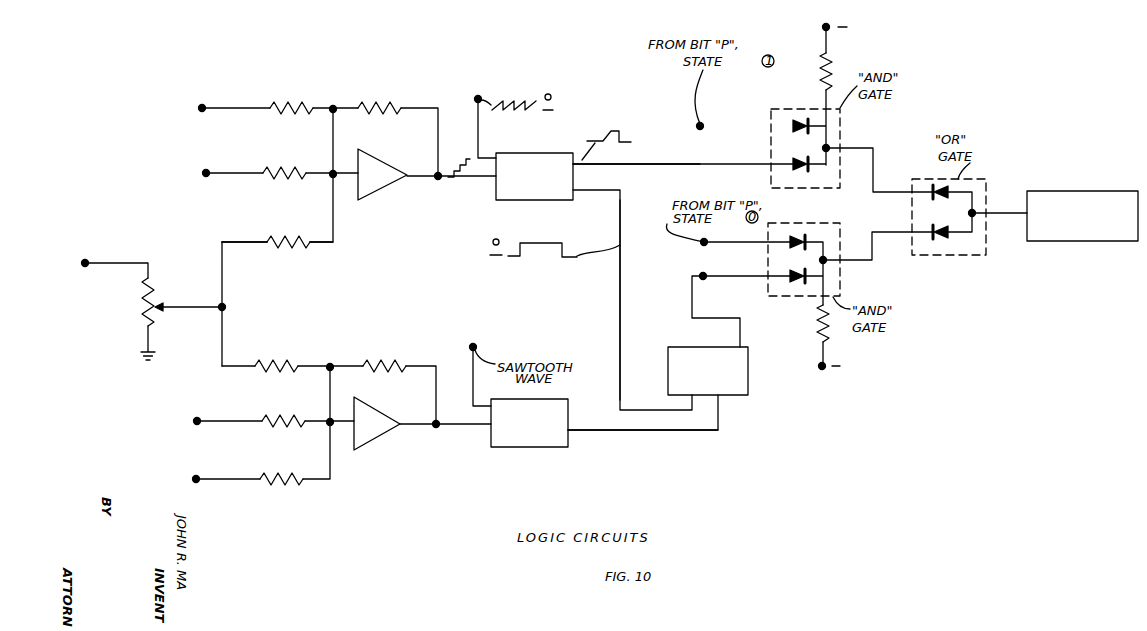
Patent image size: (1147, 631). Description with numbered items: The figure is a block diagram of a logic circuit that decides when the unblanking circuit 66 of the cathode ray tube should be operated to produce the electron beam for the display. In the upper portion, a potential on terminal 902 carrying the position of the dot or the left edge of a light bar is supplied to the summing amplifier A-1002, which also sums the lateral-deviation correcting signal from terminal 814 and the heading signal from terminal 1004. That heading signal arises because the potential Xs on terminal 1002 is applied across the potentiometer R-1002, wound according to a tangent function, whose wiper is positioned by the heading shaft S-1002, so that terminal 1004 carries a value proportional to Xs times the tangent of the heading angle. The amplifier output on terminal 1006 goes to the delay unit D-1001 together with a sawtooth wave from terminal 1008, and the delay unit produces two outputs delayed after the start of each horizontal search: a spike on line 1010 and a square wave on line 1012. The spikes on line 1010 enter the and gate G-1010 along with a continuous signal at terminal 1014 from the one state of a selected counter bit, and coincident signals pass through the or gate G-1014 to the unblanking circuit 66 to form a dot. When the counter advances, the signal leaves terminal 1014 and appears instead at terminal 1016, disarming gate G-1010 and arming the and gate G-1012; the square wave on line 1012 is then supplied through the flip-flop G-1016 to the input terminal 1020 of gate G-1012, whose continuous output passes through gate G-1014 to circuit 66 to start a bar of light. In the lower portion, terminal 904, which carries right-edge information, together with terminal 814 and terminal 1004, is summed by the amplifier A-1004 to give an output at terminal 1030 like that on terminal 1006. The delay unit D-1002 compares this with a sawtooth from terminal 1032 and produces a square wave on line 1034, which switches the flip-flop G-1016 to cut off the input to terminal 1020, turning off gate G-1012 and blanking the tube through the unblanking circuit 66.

The terminal 902 is at (200, 108).
The terminal 814 is at (204, 173).
The terminal 904 is at (194, 421).
The terminal 1002 is at (88, 277).
The potentiometer R-1002 is at (143, 312).
The shaft S-1002 is at (179, 300).
The terminal 1004 is at (224, 306).
The summing amplifier A-1002 is at (363, 198).
The amplifier A-1004 is at (373, 437).
The terminal 1006 is at (438, 178).
The terminal 1008 is at (480, 97).
The delay unit D-1001 is at (508, 200).
The delay unit D-1002 is at (518, 447).
The line 1010 is at (640, 164).
The line 1012 is at (620, 310).
The terminal 1014 is at (702, 128).
The terminal 1016 is at (705, 244).
The input terminal 1020 is at (705, 278).
The and gate G-1010 is at (837, 140).
The and gate G-1012 is at (835, 272).
The or gate G-1014 is at (987, 198).
The flip-flop G-1016 is at (748, 380).
The unblanking circuit 66 is at (1073, 241).
The terminal 1032 is at (475, 346).
The terminal 1030 is at (437, 428).
The line 1034 is at (628, 430).